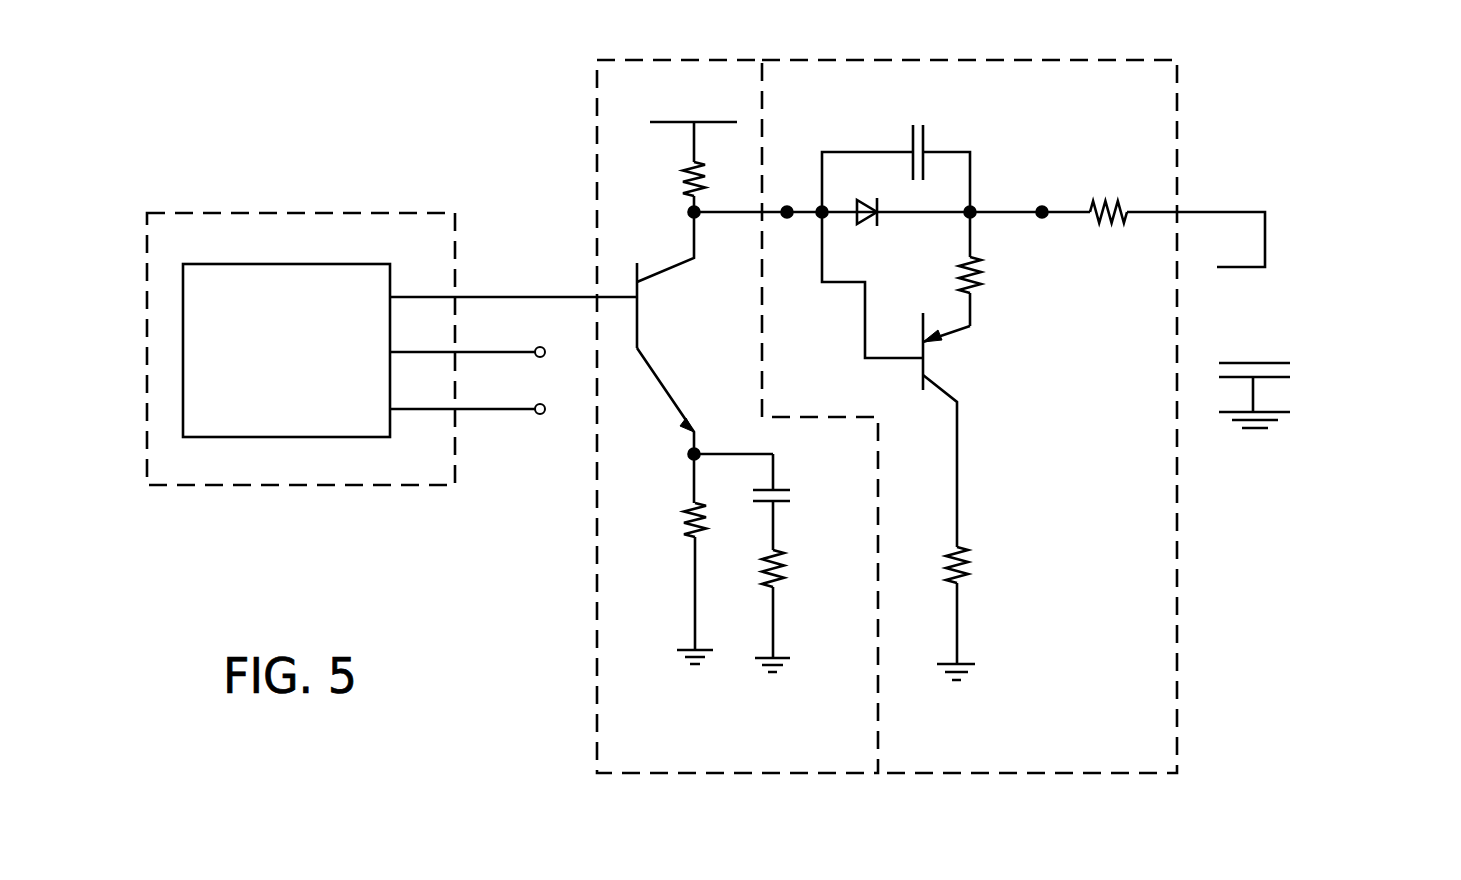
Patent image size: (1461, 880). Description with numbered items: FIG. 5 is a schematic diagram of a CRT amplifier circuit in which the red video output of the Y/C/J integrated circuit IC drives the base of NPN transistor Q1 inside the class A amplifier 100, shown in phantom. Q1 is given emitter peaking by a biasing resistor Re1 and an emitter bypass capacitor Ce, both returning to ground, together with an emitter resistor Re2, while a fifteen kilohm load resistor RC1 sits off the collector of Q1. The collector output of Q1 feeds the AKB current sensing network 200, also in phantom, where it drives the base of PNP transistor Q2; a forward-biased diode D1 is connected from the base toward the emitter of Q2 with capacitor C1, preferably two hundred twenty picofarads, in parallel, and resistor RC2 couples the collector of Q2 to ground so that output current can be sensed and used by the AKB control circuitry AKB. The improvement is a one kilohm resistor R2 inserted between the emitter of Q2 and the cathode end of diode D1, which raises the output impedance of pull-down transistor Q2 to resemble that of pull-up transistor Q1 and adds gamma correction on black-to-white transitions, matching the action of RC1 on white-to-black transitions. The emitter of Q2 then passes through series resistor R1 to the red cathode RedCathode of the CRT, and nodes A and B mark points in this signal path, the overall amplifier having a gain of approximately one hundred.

The amplifier 100 is at (654, 60).
The AKB current sensing network 200 is at (1190, 50).
The NPN transistor Q1 is at (676, 404).
The PNP transistor Q2 is at (927, 352).
The resistor R1 is at (1100, 222).
The resistor R2 is at (966, 276).
The capacitor C1 is at (953, 120).
The diode D1 is at (876, 226).
The emitter bypass capacitor Ce is at (780, 501).
The resistor Re1 is at (688, 508).
The emitter resistor Re2 is at (790, 553).
The load resistor RC1 is at (696, 195).
The resistor RC2 is at (962, 584).
The node A is at (787, 206).
The node B is at (1044, 206).
The AKB control circuitry AKB is at (958, 420).
The Y/C/J IC is at (392, 349).
The red cathode RedCathode is at (1330, 371).